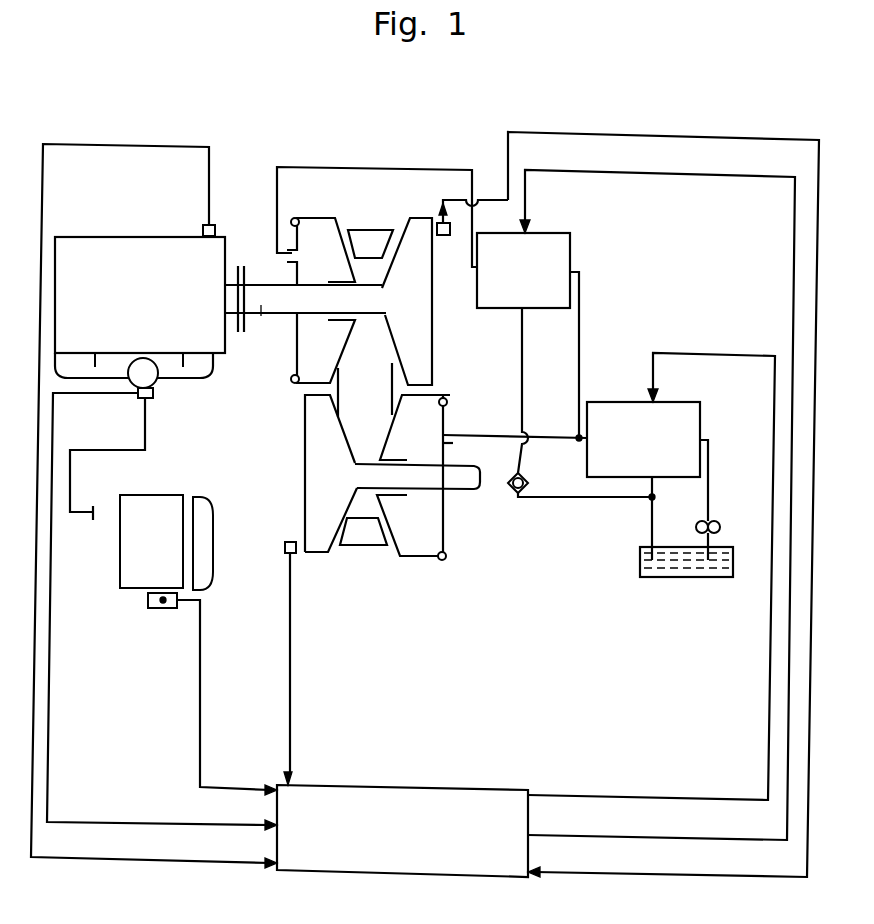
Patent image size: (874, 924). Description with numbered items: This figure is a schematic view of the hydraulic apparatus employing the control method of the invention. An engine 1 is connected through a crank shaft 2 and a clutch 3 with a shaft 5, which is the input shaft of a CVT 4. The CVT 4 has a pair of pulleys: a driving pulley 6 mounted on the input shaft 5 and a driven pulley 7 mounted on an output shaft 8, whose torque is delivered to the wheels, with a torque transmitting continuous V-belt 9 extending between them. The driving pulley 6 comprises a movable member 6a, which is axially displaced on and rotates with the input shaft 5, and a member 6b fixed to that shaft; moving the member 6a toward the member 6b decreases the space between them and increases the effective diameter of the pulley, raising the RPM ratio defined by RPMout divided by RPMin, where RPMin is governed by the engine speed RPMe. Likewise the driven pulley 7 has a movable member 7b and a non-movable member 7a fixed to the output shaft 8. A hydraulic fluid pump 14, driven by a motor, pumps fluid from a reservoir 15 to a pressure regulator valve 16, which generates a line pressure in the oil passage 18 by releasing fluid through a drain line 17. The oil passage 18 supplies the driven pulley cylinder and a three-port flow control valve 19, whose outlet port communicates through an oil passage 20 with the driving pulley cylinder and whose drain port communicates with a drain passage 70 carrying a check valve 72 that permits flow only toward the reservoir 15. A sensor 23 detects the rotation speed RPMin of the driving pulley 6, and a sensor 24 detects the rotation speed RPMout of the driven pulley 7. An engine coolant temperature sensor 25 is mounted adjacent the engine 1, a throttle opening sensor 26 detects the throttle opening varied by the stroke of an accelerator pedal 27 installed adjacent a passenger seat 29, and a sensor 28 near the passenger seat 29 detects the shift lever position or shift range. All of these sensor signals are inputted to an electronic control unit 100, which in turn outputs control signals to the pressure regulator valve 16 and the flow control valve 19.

The engine 1 is at (127, 247).
The crank shaft 2 is at (230, 313).
The clutch 3 is at (244, 283).
The CVT 4 is at (354, 562).
The shaft 5 is at (264, 327).
The driving pulley 6 is at (397, 212).
The movable member 6a is at (317, 228).
The member 6b is at (432, 370).
The driven pulley 7 is at (387, 560).
The non-movable member 7a is at (317, 553).
The movable member 7b is at (422, 558).
The output shaft 8 is at (470, 490).
The V-belt 9 is at (372, 238).
The hydraulic fluid pump 14 is at (722, 522).
The reservoir 15 is at (733, 563).
The pressure regulator valve 16 is at (700, 403).
The drain passage 17 is at (648, 488).
The oil passage 18 is at (582, 392).
The flow control valve 19 is at (570, 254).
The oil passage 20 is at (440, 167).
The sensor 23 is at (443, 236).
The sensor 24 is at (283, 547).
The engine coolant temperature sensor 25 is at (203, 230).
The throttle opening sensor 26 is at (137, 395).
The accelerator pedal 27 is at (93, 510).
The sensor 28 is at (165, 608).
The passenger seat 29 is at (160, 512).
The drain passage 70 is at (522, 380).
The check valve 72 is at (514, 477).
The electronic control unit 100 is at (479, 793).
The engine RPM RPMe is at (230, 284).
The rotation speed of the driving pulley RPMin is at (278, 317).
The rotation speed of the driven pulley RPMout is at (453, 491).